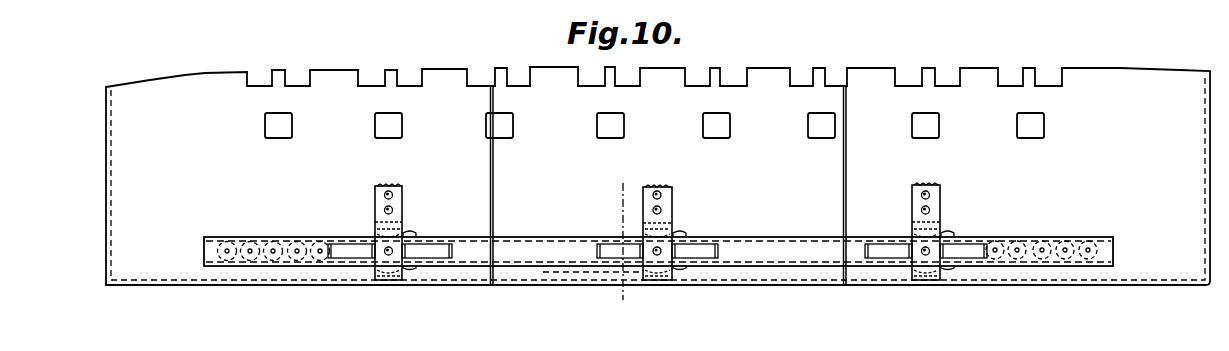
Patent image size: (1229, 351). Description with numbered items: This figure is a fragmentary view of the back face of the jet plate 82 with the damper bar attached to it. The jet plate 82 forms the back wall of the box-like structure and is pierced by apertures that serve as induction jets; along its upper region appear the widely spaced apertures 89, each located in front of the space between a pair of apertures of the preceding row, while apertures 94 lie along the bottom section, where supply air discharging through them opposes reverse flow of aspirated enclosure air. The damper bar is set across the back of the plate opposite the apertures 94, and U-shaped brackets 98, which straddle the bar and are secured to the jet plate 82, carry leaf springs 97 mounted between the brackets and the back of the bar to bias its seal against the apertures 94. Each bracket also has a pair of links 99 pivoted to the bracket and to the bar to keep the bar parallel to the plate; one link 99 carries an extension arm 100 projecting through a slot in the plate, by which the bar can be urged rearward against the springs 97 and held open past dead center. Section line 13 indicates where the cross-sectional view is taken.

The jet plate 82 is at (1170, 268).
The apertures 89 is at (375, 127).
The leaf springs 97 is at (434, 248).
The U-shaped brackets 98 is at (403, 200).
The links 99 is at (404, 233).
The apertures 94 is at (1090, 238).
The section line 13 is at (616, 301).
The extension arm 100 is at (552, 274).